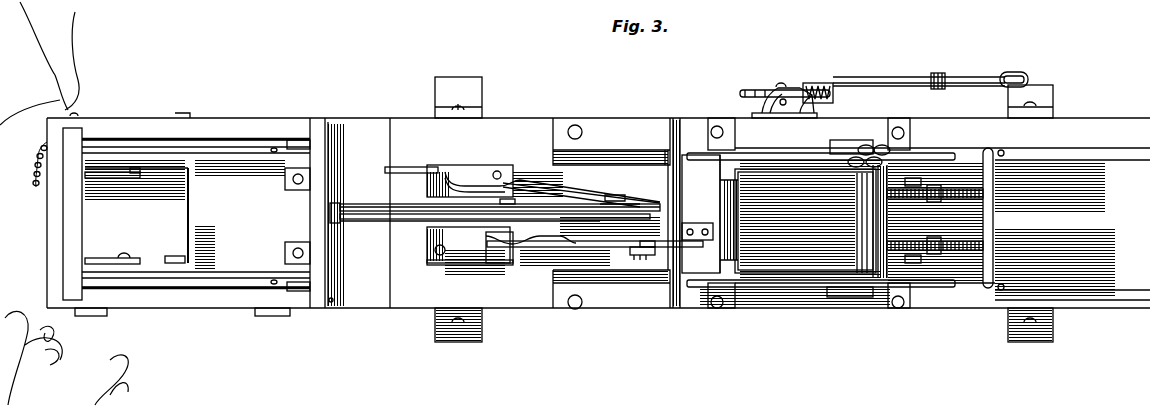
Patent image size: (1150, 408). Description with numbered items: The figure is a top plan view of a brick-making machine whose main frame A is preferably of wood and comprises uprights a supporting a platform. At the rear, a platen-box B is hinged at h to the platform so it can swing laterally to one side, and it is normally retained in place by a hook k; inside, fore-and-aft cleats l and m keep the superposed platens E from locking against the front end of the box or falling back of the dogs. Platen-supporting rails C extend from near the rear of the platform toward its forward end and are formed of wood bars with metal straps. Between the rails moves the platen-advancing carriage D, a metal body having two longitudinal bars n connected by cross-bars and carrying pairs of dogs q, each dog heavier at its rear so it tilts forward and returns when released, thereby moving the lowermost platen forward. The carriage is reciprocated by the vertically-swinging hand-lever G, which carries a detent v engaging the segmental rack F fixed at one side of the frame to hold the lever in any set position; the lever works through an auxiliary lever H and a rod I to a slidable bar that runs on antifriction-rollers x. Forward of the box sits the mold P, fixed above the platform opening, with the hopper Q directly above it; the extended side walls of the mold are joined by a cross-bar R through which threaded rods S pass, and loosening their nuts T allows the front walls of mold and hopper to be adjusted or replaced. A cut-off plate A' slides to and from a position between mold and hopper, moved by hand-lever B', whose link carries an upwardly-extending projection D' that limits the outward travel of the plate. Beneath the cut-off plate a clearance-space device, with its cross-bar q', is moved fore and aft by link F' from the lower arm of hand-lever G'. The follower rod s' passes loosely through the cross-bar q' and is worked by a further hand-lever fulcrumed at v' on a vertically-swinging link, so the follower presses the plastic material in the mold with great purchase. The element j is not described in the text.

The fore-and-aft cleat m is at (100, 146).
The platen-supporting rail C is at (225, 146).
The fore-and-aft cleat l is at (292, 142).
The platen-box B is at (330, 213).
The hand-lever G' is at (522, 171).
The upright a is at (483, 112).
The segmental rack F is at (781, 90).
The detent v is at (954, 68).
The hand-lever G is at (933, 67).
The main frame A is at (983, 114).
The dog q is at (112, 216).
The longitudinal bar n is at (265, 170).
The mold P is at (190, 218).
The platen-advancing carriage D is at (190, 255).
The hinge h is at (95, 318).
The rod s' is at (495, 197).
The fulcrum v' is at (495, 233).
The connecting rod j is at (405, 222).
The hook k is at (445, 232).
The hand-lever B' is at (470, 276).
The link F' is at (581, 191).
The rod I is at (595, 201).
The upwardly-extending projection D' is at (594, 235).
The stop s is at (642, 236).
The auxiliary vertically-swinging lever H is at (630, 250).
The cross-bar q' is at (710, 214).
The cut-off plate A' is at (701, 214).
The hopper Q is at (805, 221).
The antifriction-roller x is at (858, 218).
The cross-bar R is at (935, 222).
The threaded rod S is at (962, 190).
The nut T is at (950, 190).
The platen E is at (988, 221).